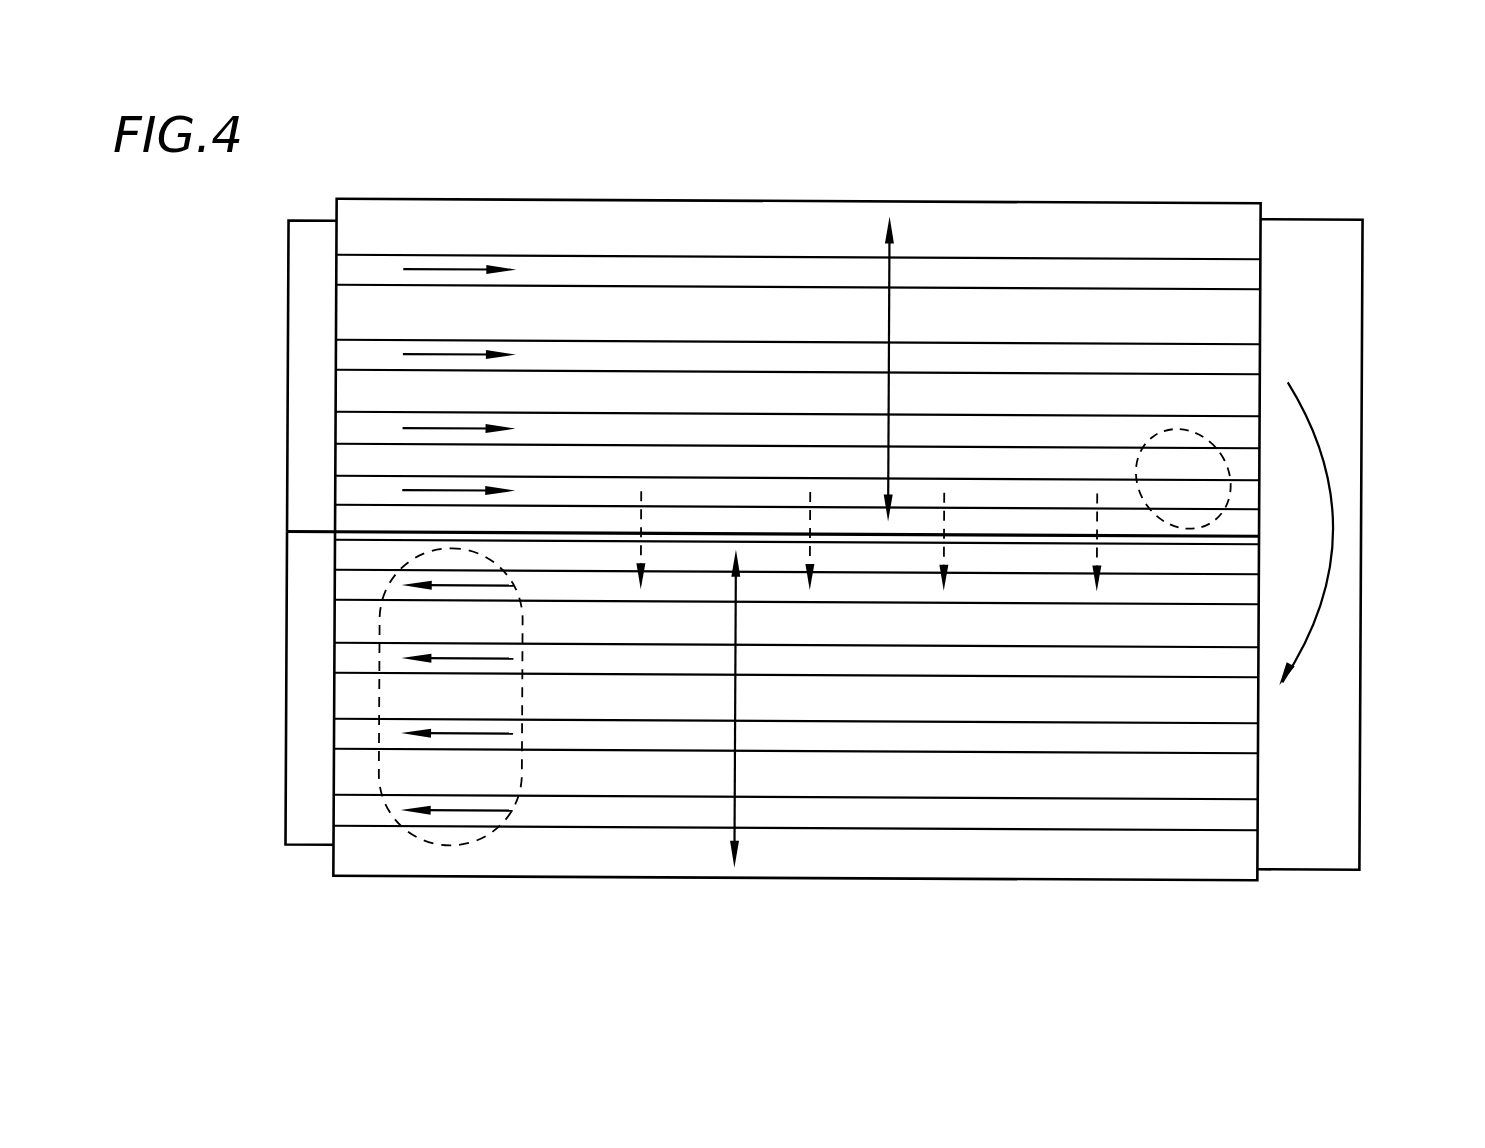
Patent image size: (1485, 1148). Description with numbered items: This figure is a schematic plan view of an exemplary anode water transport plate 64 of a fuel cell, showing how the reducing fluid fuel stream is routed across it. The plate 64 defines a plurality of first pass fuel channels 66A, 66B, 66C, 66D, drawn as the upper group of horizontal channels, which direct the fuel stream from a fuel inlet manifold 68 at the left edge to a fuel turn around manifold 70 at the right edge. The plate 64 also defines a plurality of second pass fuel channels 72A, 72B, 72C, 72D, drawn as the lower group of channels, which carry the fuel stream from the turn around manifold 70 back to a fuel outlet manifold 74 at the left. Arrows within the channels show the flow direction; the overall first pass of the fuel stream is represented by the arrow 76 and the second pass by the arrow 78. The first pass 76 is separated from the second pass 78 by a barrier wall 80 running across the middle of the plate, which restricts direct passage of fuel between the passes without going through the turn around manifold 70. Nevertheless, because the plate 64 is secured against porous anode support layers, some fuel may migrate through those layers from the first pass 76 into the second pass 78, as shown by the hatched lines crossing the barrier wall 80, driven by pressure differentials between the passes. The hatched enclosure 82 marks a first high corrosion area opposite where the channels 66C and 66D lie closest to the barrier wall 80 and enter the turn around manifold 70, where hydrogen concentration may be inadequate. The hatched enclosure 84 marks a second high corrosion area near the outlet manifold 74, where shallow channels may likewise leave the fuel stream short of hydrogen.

The anode water transport plate 64 is at (1192, 224).
The first pass fuel channel 66A is at (691, 252).
The first pass fuel channel 66B is at (701, 337).
The first pass fuel channel 66C is at (670, 418).
The first pass fuel channel 66D is at (722, 480).
The fuel inlet manifold 68 is at (292, 317).
The fuel turn around manifold 70 is at (1324, 346).
The second pass fuel channel 72A is at (1016, 600).
The second pass fuel channel 72B is at (1008, 672).
The second pass fuel channel 72C is at (1053, 747).
The second pass fuel channel 72D is at (995, 822).
The fuel outlet manifold 74 is at (295, 670).
The first pass 76 is at (893, 249).
The second pass 78 is at (733, 832).
The barrier wall 80 is at (384, 542).
The first high corrosion area 82 is at (1222, 457).
The second high corrosion area 84 is at (408, 768).